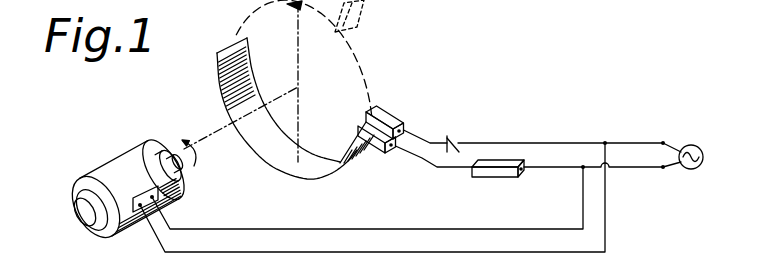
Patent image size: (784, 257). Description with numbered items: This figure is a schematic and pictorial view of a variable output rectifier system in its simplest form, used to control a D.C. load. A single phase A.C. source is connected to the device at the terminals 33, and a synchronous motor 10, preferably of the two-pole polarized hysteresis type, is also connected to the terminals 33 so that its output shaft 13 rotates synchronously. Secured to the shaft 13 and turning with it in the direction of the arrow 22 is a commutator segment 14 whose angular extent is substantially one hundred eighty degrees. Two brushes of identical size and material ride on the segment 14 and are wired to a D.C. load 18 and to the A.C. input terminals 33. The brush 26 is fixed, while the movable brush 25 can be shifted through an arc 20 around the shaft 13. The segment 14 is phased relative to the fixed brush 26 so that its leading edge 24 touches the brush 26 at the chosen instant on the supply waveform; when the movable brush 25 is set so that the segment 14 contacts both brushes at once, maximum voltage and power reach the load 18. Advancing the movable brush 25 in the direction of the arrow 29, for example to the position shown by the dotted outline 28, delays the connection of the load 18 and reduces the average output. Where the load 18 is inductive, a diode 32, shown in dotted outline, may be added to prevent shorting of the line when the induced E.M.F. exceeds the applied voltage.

The synchronous motor 10 is at (125, 159).
The output shaft 13 is at (216, 132).
The commutator segment 14 is at (228, 69).
The D.C. load 18 is at (495, 178).
The arc 20 is at (361, 63).
The arrow 22 is at (194, 166).
The leading edge 24 is at (356, 134).
The movable brush 25 is at (395, 117).
The fixed brush 26 is at (380, 153).
The dotted outline 28 is at (360, 15).
The arrow 29 is at (300, 6).
The diode 32 is at (459, 137).
The terminals 33 is at (697, 146).